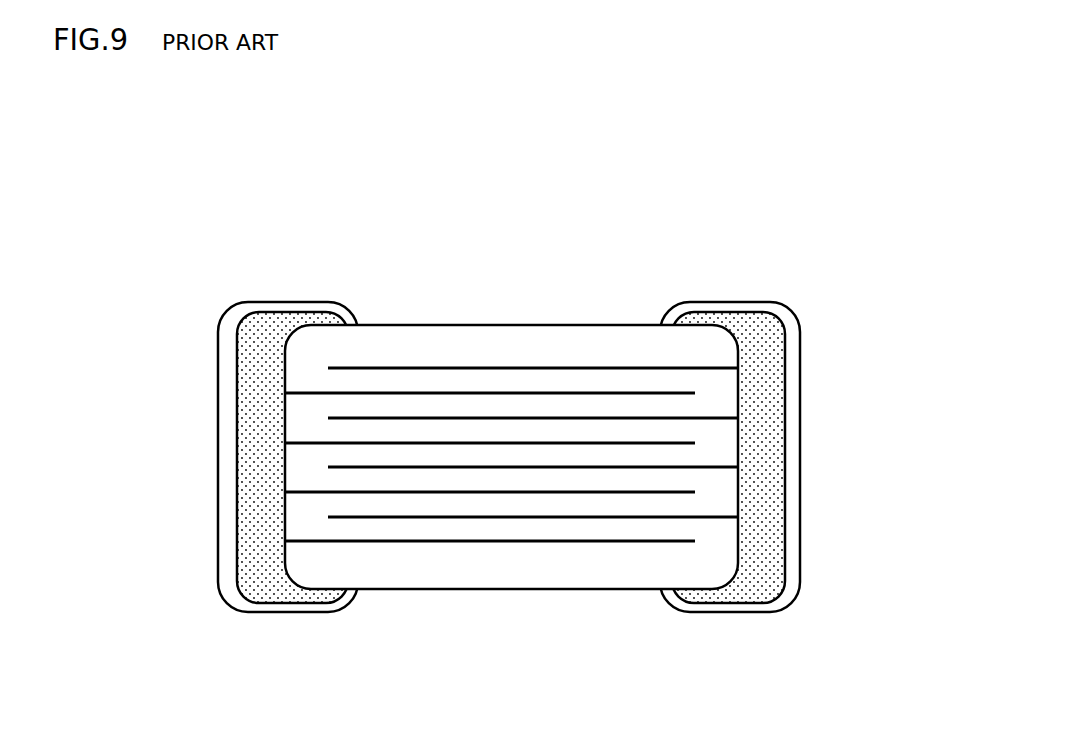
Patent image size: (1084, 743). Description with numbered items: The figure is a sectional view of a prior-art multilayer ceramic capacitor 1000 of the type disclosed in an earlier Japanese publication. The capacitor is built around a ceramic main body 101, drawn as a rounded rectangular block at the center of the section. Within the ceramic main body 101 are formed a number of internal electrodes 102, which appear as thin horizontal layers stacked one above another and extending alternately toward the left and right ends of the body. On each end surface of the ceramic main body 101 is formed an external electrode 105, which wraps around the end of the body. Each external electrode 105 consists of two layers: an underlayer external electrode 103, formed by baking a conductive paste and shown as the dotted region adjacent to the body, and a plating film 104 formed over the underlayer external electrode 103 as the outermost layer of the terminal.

The multilayer ceramic capacitor 1000 is at (188, 151).
The ceramic main body 101 is at (422, 343).
The internal electrode 102 is at (507, 367).
The underlayer external electrode 103 is at (260, 397).
The plating film 104 is at (230, 495).
The external electrode 105 is at (508, 389).